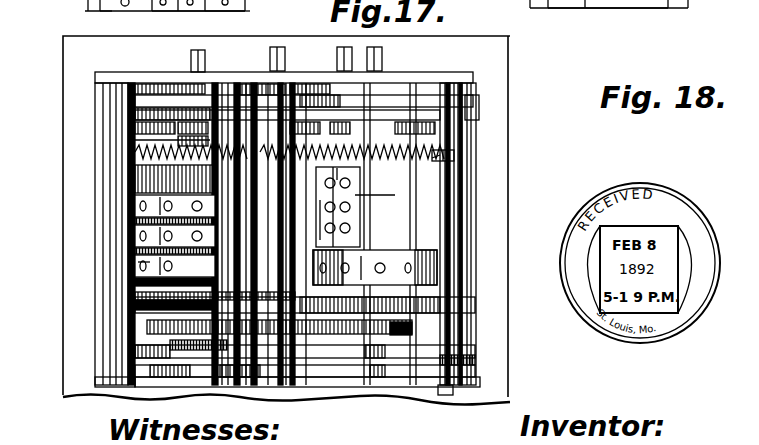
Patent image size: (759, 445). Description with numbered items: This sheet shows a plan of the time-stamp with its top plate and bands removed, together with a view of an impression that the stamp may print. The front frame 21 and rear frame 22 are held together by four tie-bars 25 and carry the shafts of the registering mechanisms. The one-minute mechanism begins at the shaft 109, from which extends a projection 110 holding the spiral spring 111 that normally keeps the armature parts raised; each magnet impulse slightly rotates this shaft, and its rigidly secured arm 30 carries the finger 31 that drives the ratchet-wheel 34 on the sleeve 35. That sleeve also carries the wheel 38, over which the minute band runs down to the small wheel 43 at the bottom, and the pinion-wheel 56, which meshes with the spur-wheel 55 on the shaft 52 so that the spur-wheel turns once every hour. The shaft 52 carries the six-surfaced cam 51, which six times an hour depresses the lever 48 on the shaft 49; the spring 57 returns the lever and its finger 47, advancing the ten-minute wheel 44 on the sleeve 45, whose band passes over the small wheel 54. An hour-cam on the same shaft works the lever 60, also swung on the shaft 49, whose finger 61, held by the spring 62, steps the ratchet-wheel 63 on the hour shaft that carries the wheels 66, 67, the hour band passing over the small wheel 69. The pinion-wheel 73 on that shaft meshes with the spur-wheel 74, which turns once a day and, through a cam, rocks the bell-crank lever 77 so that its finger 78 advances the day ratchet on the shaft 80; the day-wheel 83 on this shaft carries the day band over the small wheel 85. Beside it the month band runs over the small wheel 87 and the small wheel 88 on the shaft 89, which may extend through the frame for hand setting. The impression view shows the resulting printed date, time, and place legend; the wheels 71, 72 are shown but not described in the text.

In FIG. 17, the front frame 21 is at (423, 74).
In FIG. 17, the rear frame 22 is at (368, 382).
In FIG. 17, the tie-bars 25 is at (95, 100).
In FIG. 17, the arm 30 is at (325, 356).
In FIG. 17, the finger 31 is at (130, 369).
In FIG. 17, the ratchet-wheel 34 is at (218, 370).
In FIG. 17, the sleeve 35 is at (200, 275).
In FIG. 17, the wheel 38 is at (160, 231).
In FIG. 18, the small wheel 43 is at (192, 11).
In FIG. 17, the wheel 44 is at (160, 208).
In FIG. 17, the sleeve 45 is at (190, 176).
In FIG. 17, the finger 47 is at (160, 100).
In FIG. 17, the lever 48 is at (400, 115).
In FIG. 17, the shaft 49 is at (440, 167).
In FIG. 17, the cam 51 is at (258, 94).
In FIG. 17, the shaft 52 is at (325, 207).
In FIG. 18, the small wheel 54 is at (165, 11).
In FIG. 17, the spur-wheel 55 is at (402, 336).
In FIG. 17, the pinion-wheel 56 is at (165, 326).
In FIG. 17, the spring 57 is at (210, 78).
In FIG. 17, the lever 60 is at (476, 306).
In FIG. 17, the finger 61 is at (160, 298).
In FIG. 17, the spring 62 is at (175, 308).
In FIG. 17, the ratchet-wheel 63 is at (150, 323).
In FIG. 17, the wheel 66 is at (135, 150).
In FIG. 17, the wheel 67 is at (140, 260).
In FIG. 18, the small wheel 69 is at (104, 11).
In FIG. 18, the key 71 is at (228, 11).
In FIG. 18, the key 72 is at (285, 11).
In FIG. 17, the pinion-wheel 73 is at (160, 120).
In FIG. 17, the spur-wheel 74 is at (135, 133).
In FIG. 17, the bell-crank lever 77 is at (479, 120).
In FIG. 17, the finger 78 is at (333, 100).
In FIG. 17, the shaft 80 is at (378, 377).
In FIG. 17, the day-wheel 83 is at (403, 252).
In FIG. 18, the small wheel 85 is at (565, 8).
In FIG. 18, the small wheel 87 is at (632, 8).
In FIG. 17, the small wheel 87 is at (318, 205).
In FIG. 17, the small wheel 88 is at (395, 195).
In FIG. 17, the shaft 89 is at (345, 128).
In FIG. 17, the shaft 109 is at (440, 203).
In FIG. 17, the projection 110 is at (454, 156).
In FIG. 17, the spiral spring 111 is at (350, 175).